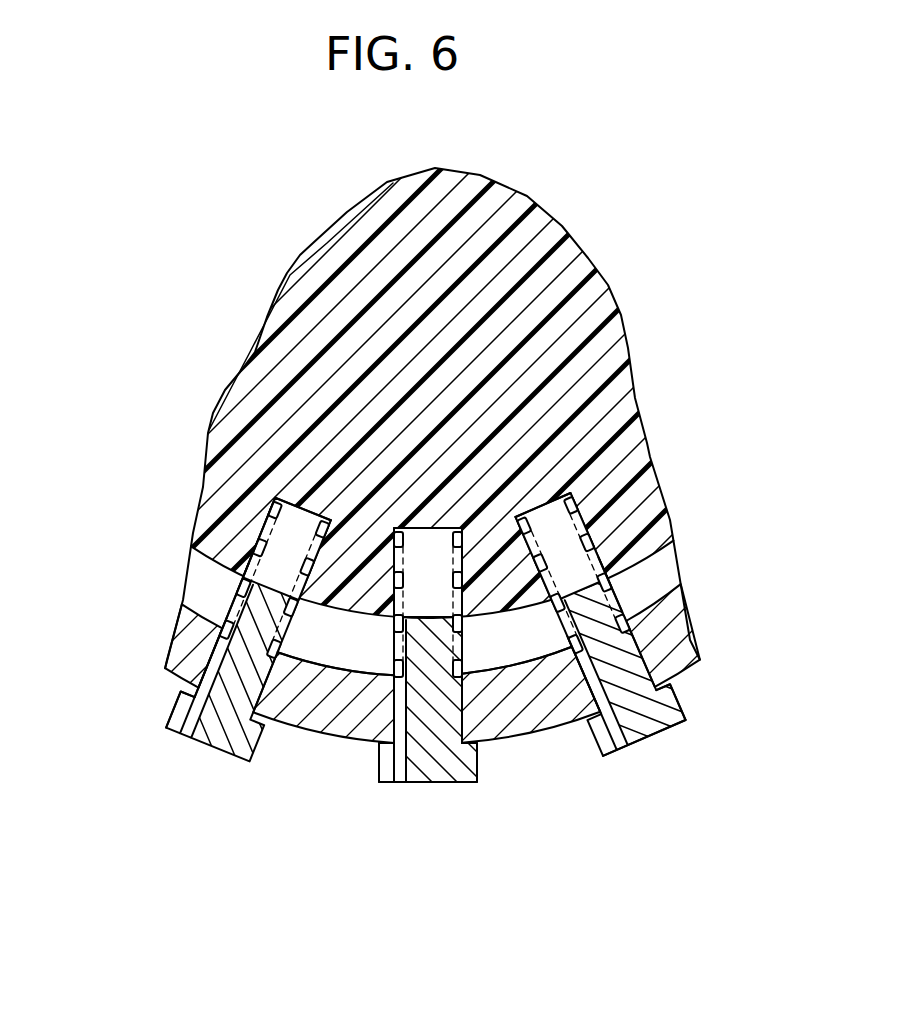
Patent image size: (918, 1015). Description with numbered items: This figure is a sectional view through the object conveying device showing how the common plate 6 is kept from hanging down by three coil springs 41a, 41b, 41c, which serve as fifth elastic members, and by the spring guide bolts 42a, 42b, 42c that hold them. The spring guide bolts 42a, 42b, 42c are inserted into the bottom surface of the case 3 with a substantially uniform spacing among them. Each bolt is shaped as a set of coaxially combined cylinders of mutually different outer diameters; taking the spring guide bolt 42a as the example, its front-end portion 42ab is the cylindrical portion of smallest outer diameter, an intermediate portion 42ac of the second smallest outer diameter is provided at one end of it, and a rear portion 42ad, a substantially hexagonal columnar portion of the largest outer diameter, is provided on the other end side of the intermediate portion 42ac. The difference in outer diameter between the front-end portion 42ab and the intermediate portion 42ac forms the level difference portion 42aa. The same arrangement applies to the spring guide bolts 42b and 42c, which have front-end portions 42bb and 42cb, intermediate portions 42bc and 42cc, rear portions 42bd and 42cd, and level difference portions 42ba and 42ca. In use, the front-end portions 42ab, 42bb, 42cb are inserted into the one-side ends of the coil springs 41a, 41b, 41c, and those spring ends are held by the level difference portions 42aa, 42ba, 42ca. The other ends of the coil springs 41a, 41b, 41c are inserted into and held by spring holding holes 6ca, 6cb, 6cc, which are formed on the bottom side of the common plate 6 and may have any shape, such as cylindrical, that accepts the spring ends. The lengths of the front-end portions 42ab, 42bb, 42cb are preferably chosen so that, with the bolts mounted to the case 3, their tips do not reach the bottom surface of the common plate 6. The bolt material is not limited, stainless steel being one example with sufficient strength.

The common plate 6 is at (578, 305).
The spring holding hole 6ca is at (297, 530).
The spring holding hole 6cb is at (336, 479).
The spring holding hole 6cc is at (573, 427).
The case 3 is at (683, 660).
The coil spring 41a is at (240, 567).
The coil spring 41b is at (465, 627).
The coil spring 41c is at (585, 523).
The spring guide bolt 42a is at (213, 745).
The level difference portion 42aa is at (217, 641).
The front-end portion 42ab is at (242, 604).
The intermediate portion 42ac is at (272, 705).
The rear portion 42ad is at (176, 712).
The spring guide bolt 42b is at (443, 783).
The level difference portion 42ba is at (400, 682).
The front-end portion 42bb is at (480, 737).
The intermediate portion 42bc is at (470, 710).
The rear portion 42bd is at (393, 766).
The spring guide bolt 42c is at (640, 742).
The level difference portion 42ca is at (665, 711).
The front-end portion 42cb is at (600, 592).
The intermediate portion 42cc is at (592, 662).
The rear portion 42cd is at (648, 735).